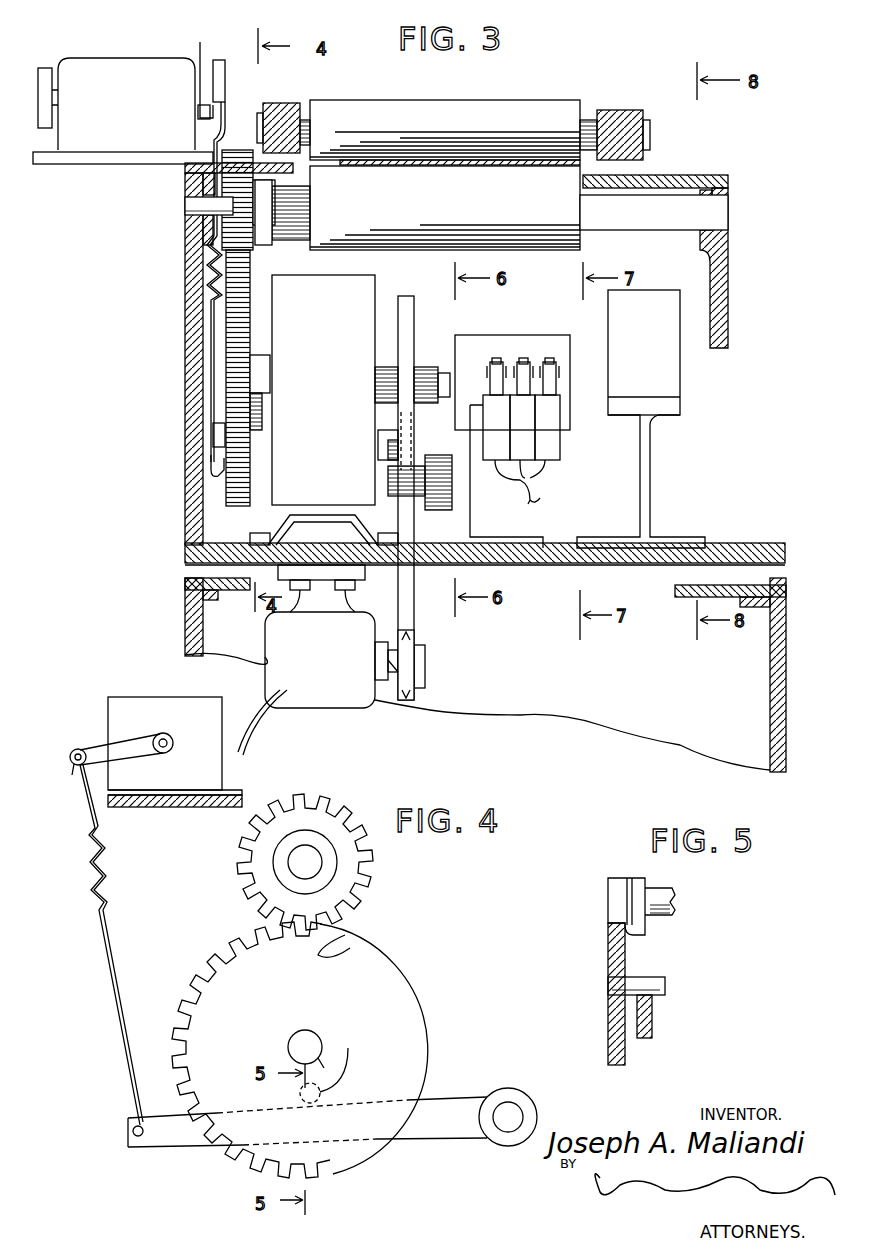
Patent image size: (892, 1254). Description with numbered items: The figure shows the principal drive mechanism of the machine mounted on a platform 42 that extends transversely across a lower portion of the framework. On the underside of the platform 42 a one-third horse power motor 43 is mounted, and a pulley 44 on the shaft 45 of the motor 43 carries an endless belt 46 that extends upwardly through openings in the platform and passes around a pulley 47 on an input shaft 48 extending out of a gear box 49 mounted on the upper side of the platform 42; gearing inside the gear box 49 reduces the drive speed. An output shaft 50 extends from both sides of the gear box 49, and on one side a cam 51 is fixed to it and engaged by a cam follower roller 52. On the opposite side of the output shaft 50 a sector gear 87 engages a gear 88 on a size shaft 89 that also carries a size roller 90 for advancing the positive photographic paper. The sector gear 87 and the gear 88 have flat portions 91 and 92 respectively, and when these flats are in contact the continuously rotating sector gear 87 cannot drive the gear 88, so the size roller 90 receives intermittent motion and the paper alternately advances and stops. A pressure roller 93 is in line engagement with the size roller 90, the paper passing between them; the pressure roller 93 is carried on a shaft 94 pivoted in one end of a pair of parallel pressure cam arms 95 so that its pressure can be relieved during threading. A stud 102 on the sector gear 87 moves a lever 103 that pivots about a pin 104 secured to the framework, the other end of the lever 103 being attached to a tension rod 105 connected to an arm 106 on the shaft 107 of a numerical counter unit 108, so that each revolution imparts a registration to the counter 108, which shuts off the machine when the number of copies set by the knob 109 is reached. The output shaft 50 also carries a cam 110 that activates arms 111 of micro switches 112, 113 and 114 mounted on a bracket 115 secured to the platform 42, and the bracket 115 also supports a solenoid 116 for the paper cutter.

In FIG. 3, the platform 42 is at (735, 548).
In FIG. 3, the motor 43 is at (306, 660).
In FIG. 3, the pulley 44 is at (420, 680).
In FIG. 3, the shaft 45 is at (392, 665).
In FIG. 3, the endless belt 46 is at (415, 650).
In FIG. 3, the pulley 47 is at (400, 420).
In FIG. 3, the input shaft 48 is at (392, 440).
In FIG. 3, the gear box 49 is at (324, 410).
In FIG. 3, the output shaft 50 is at (270, 388).
In FIG. 4, the output shaft 50 is at (312, 1046).
In FIG. 5, the output shaft 50 is at (680, 902).
In FIG. 3, the cam 51 is at (405, 308).
In FIG. 3, the cam follower roller 52 is at (390, 490).
In FIG. 3, the sector gear 87 is at (236, 324).
In FIG. 4, the sector gear 87 is at (244, 1050).
In FIG. 5, the sector gear 87 is at (608, 1027).
In FIG. 3, the gear 88 is at (238, 190).
In FIG. 4, the gear 88 is at (358, 878).
In FIG. 3, the size shaft 89 is at (200, 205).
In FIG. 4, the size shaft 89 is at (298, 862).
In FIG. 3, the size roller 90 is at (491, 208).
In FIG. 4, the flat portion 91 is at (428, 1032).
In FIG. 4, the flat portion 92 is at (345, 935).
In FIG. 3, the pressure roller 93 is at (490, 118).
In FIG. 3, the shaft 94 is at (590, 118).
In FIG. 3, the pressure cam arms 95 is at (272, 104).
In FIG. 3, the stud 102 is at (214, 432).
In FIG. 4, the stud 102 is at (322, 1095).
In FIG. 5, the stud 102 is at (660, 978).
In FIG. 3, the lever 103 is at (214, 470).
In FIG. 4, the lever 103 is at (415, 1140).
In FIG. 5, the lever 103 is at (655, 1027).
In FIG. 4, the pin 104 is at (524, 1117).
In FIG. 3, the tension rod 105 is at (212, 350).
In FIG. 4, the tension rod 105 is at (120, 1030).
In FIG. 3, the arm 106 is at (220, 60).
In FIG. 4, the arm 106 is at (82, 748).
In FIG. 3, the shaft 107 is at (200, 46).
In FIG. 4, the shaft 107 is at (164, 753).
In FIG. 3, the numerical counter unit 108 is at (123, 104).
In FIG. 4, the numerical counter unit 108 is at (145, 697).
In FIG. 3, the knob 109 is at (46, 68).
In FIG. 3, the cam 110 is at (488, 335).
In FIG. 3, the arms 111 is at (541, 476).
In FIG. 3, the micro switch 112 is at (497, 409).
In FIG. 3, the micro switch 113 is at (523, 409).
In FIG. 3, the micro switch 114 is at (548, 409).
In FIG. 3, the bracket 115 is at (652, 480).
In FIG. 3, the solenoid 116 is at (644, 352).